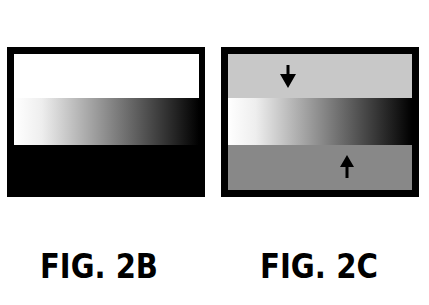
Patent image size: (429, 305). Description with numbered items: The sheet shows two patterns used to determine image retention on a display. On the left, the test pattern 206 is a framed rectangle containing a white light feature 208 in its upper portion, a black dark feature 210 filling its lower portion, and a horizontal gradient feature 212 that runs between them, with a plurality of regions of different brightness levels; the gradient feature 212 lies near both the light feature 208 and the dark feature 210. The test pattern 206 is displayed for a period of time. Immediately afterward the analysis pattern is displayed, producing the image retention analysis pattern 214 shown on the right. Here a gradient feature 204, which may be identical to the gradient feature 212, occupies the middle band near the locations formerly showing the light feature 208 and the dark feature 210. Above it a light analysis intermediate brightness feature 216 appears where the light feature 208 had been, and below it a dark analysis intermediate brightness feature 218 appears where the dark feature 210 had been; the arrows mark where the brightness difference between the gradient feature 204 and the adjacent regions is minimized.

In FIG. 2C, the gradient feature 204 is at (292, 125).
In FIG. 2B, the test pattern 206 is at (110, 48).
In FIG. 2B, the light feature 208 is at (33, 72).
In FIG. 2B, the dark feature 210 is at (128, 195).
In FIG. 2B, the gradient feature 212 is at (40, 196).
In FIG. 2C, the image retention analysis pattern 214 is at (317, 48).
In FIG. 2C, the light analysis intermediate brightness feature 216 is at (240, 75).
In FIG. 2C, the dark analysis intermediate brightness feature 218 is at (360, 178).